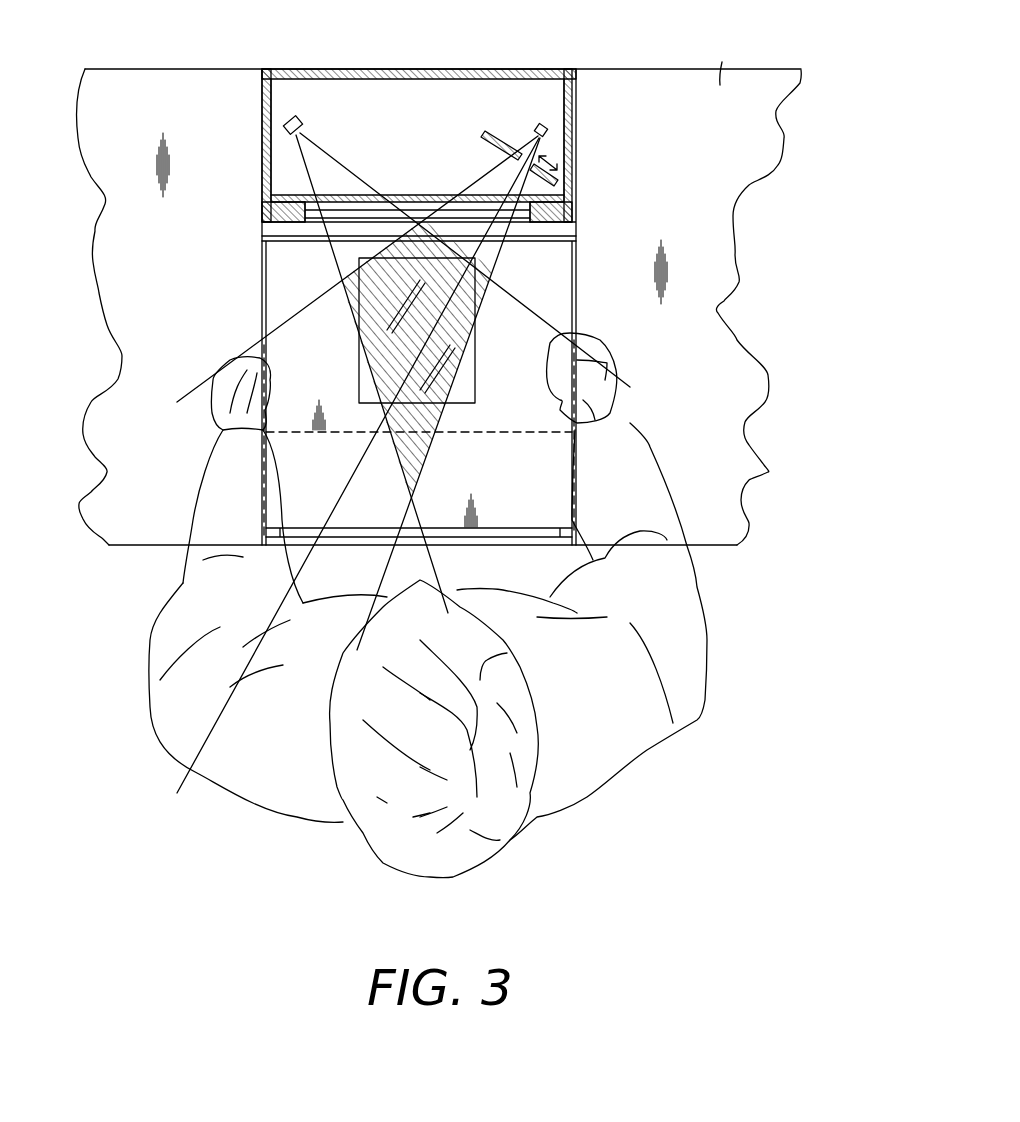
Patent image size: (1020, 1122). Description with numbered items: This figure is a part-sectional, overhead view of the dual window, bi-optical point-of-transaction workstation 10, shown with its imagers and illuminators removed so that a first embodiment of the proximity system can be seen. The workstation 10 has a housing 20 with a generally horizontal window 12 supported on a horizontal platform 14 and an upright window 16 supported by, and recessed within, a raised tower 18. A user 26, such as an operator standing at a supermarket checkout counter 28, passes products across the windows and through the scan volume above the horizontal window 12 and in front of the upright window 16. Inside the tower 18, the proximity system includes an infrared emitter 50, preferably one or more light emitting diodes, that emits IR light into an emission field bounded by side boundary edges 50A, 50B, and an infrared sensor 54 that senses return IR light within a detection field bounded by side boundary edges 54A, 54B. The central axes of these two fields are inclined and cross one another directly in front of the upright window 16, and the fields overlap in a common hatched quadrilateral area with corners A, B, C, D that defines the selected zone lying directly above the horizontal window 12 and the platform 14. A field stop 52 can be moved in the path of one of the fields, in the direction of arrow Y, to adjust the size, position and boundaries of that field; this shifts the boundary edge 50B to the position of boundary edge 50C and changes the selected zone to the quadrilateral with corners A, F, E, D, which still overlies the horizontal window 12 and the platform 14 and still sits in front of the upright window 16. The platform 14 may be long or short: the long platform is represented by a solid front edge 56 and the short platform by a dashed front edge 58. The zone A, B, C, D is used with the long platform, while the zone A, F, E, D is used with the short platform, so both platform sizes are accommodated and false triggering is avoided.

The point-of-transaction workstation 10 is at (621, 78).
The horizontal window 12 is at (359, 376).
The platform 14 is at (577, 238).
The upright window 16 is at (417, 196).
The tower 18 is at (577, 106).
The housing 20 is at (259, 66).
The user 26 is at (258, 795).
The checkout counter 28 is at (438, 289).
The infrared emitter 50 is at (541, 124).
The side boundary edge 50A is at (265, 300).
The side boundary edge 50B is at (495, 257).
The boundary edge 50C is at (343, 493).
The field stop 52 is at (553, 177).
The infrared sensor 54 is at (300, 118).
The side boundary edge 54A is at (337, 153).
The side boundary edge 54B is at (307, 172).
The front edge 56 is at (527, 527).
The front edge 58 is at (492, 435).
The corner A is at (437, 206).
The corner B is at (413, 502).
The corner C is at (491, 294).
The corner D is at (340, 280).
The corner E is at (481, 314).
The corner F is at (383, 418).
The arrow Y is at (551, 157).